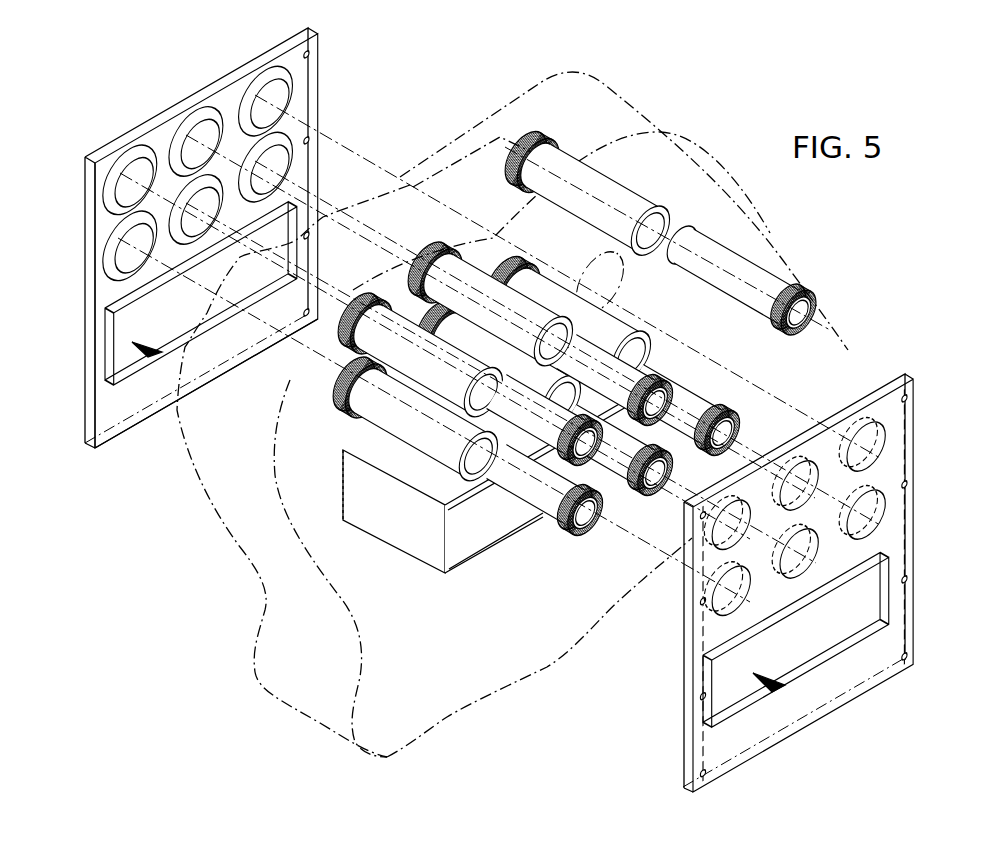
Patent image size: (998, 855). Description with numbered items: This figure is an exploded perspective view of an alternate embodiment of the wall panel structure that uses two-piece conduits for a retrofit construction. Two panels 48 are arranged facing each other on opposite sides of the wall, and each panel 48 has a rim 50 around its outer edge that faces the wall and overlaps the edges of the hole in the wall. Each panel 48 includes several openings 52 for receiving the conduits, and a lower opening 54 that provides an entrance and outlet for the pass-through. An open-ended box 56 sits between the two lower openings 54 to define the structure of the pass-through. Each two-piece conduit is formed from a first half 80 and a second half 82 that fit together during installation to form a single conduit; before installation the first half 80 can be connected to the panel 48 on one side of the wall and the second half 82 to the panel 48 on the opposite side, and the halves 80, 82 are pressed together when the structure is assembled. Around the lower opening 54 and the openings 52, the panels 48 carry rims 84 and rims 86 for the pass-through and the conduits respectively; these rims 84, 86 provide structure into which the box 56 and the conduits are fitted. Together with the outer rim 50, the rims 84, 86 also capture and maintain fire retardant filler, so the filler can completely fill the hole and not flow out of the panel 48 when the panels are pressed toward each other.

The panel 48 is at (84, 367).
The rim 50 is at (118, 430).
The opening 52 is at (293, 101).
The lower opening 54 is at (150, 352).
The open-ended box 56 is at (423, 557).
The first half 80 is at (607, 186).
The second half 82 is at (768, 262).
The rim 84 is at (108, 322).
The rim 86 is at (108, 178).